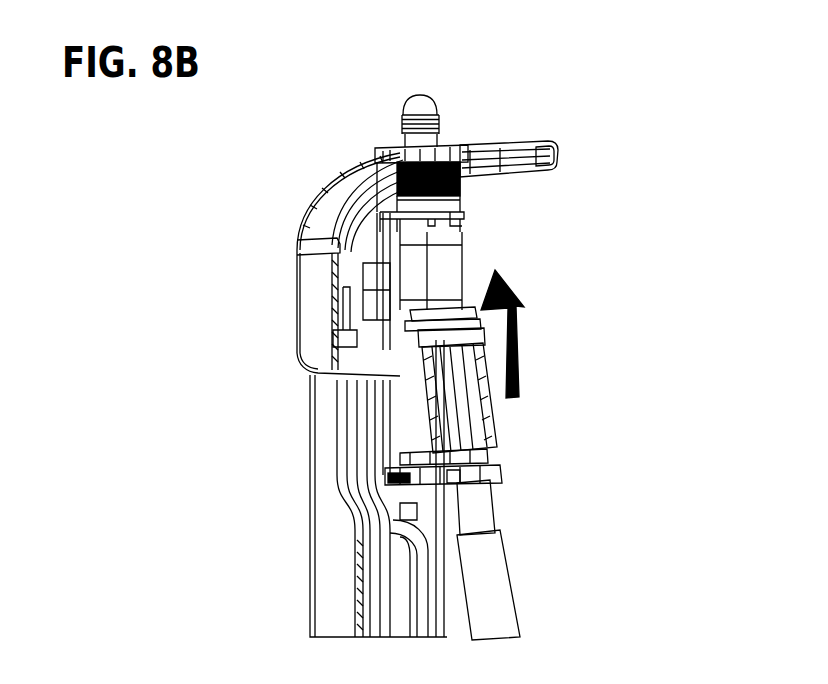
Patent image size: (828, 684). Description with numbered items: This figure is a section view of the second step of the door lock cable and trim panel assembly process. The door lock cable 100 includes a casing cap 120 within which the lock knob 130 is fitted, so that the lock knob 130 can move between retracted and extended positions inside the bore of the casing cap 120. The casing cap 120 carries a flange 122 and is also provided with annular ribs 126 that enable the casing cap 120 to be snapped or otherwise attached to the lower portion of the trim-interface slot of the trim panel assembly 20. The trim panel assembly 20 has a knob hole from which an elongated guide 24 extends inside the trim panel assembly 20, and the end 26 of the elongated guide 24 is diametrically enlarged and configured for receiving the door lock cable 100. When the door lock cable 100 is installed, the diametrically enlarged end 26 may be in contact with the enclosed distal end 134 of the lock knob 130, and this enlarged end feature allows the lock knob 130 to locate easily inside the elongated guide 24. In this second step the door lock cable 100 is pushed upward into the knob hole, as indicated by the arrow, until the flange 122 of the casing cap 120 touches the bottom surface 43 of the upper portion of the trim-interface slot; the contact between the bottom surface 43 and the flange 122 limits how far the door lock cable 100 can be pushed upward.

The enclosed distal end 134 is at (417, 94).
The lock knob 130 is at (410, 135).
The elongated guide 24 is at (448, 200).
The diametrically enlarged end 26 is at (458, 220).
The trim panel assembly 20 is at (322, 214).
The bottom surface 43 is at (407, 336).
The flange 122 is at (433, 355).
The casing cap 120 is at (483, 430).
The annular ribs 126 is at (502, 433).
The door lock cable 100 is at (512, 538).